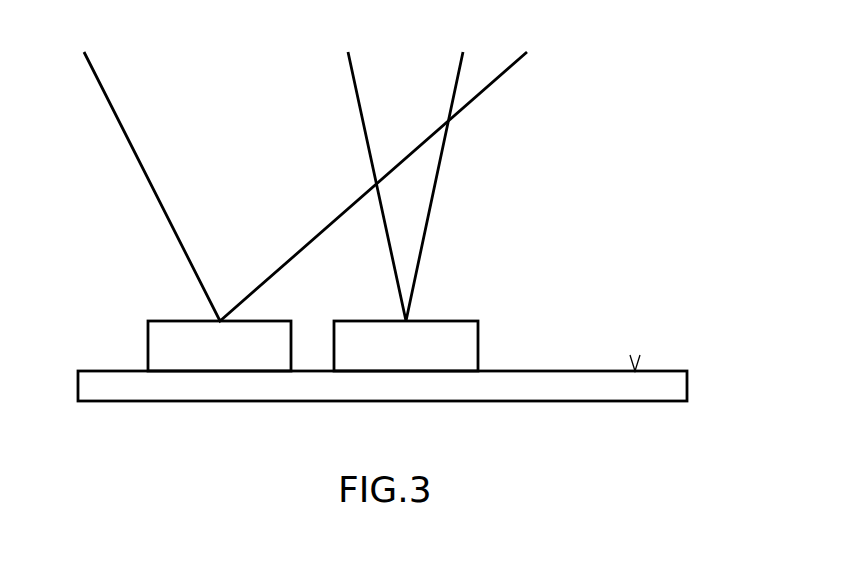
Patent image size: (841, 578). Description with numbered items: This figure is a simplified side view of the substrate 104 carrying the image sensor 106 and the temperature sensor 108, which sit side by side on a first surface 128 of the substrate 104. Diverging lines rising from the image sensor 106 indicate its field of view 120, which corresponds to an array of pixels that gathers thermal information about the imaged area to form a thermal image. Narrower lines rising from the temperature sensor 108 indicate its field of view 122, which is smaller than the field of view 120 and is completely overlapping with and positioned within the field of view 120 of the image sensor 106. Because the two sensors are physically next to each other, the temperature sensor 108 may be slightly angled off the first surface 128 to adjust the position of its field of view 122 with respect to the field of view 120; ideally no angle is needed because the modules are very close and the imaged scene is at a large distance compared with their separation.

The substrate 104 is at (670, 387).
The image sensor 106 is at (158, 343).
The temperature sensor 108 is at (463, 343).
The field of view of the image sensor 120 is at (140, 169).
The field of view of the temperature sensor 122 is at (438, 173).
The first surface 128 is at (635, 371).